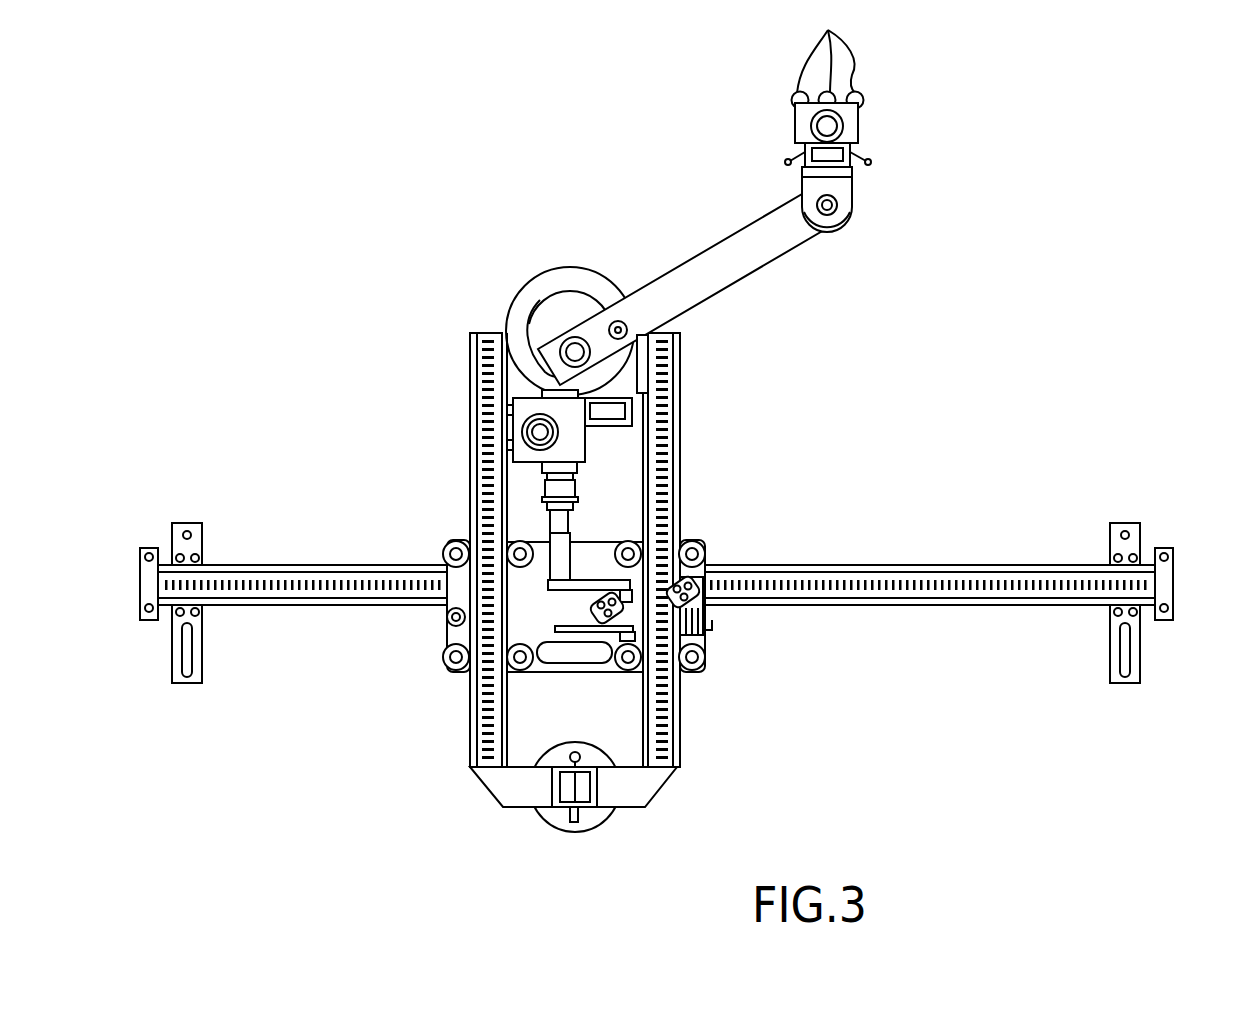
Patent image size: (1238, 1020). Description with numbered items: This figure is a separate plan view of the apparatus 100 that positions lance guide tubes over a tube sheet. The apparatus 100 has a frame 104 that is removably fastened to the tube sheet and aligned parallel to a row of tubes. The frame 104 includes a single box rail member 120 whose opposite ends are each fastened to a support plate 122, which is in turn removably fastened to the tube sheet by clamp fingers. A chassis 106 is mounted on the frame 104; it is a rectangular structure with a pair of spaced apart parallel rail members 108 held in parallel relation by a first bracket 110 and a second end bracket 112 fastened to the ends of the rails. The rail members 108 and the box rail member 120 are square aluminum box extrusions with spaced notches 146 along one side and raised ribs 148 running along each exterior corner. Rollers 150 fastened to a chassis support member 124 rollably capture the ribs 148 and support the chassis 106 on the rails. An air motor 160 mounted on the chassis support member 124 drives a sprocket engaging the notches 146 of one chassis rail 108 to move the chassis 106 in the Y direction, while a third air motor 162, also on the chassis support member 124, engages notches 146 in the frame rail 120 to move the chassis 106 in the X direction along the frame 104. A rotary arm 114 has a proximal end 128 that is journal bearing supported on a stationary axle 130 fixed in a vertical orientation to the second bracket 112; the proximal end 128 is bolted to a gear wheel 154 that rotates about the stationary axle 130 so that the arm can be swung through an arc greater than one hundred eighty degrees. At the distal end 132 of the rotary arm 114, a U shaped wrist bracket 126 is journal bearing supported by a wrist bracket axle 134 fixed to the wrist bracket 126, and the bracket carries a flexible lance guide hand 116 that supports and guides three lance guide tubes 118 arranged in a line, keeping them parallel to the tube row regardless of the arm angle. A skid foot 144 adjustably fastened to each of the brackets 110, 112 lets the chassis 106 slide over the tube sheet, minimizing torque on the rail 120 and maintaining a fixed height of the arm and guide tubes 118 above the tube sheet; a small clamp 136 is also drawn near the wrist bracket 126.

The apparatus 100 is at (947, 381).
The frame 104 is at (1026, 551).
The chassis 106 is at (699, 461).
The rail members 108 is at (470, 492).
The first bracket 110 is at (660, 787).
The second end bracket 112 is at (506, 344).
The rotary arm 114 is at (730, 291).
The flexible lance guide hand 116 is at (887, 125).
The lance guide tubes 118 is at (826, 46).
The box rail member 120 is at (923, 566).
The support plate 122 is at (202, 655).
The chassis support member 124 is at (597, 538).
The U shaped wrist bracket 126 is at (871, 191).
The proximal end 128 is at (542, 348).
The stationary axle 130 is at (568, 338).
The distal end 132 is at (820, 232).
The wrist bracket axle 134 is at (840, 206).
The clamp 136 is at (802, 178).
The skid foot 144 is at (600, 276).
The notches 146 is at (855, 580).
The raised ribs 148 is at (807, 565).
The rollers 150 is at (706, 548).
The gear wheel 154 is at (537, 305).
The air motor 160 is at (712, 607).
The third air motor 162 is at (622, 613).